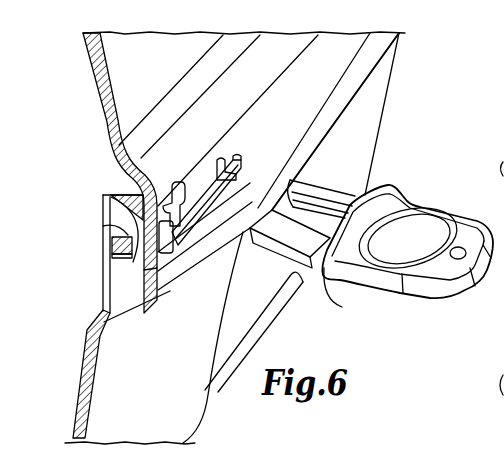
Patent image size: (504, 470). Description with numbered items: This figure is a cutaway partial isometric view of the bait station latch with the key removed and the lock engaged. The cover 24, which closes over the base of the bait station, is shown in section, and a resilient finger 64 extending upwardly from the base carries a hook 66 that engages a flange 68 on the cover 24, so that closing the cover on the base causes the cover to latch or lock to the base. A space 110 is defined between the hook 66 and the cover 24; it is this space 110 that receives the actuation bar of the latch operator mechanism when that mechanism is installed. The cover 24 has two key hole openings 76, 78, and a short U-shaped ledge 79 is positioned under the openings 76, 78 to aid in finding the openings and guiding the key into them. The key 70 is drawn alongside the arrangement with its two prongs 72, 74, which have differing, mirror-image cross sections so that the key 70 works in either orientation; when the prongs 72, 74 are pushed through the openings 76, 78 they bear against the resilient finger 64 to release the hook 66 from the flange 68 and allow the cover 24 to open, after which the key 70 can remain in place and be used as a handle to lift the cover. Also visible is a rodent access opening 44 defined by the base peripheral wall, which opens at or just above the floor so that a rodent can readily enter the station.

The cover 24 is at (107, 97).
The rodent access opening 44 is at (288, 322).
The resilient finger 64 is at (103, 208).
The hook 66 is at (117, 256).
The flange 68 is at (117, 231).
The key 70 is at (421, 250).
The prong 72 is at (271, 208).
The prong 74 is at (333, 193).
The key hole opening 76 is at (172, 190).
The key hole opening 78 is at (217, 158).
The U-shaped ledge 79 is at (190, 238).
The space 110 is at (118, 190).